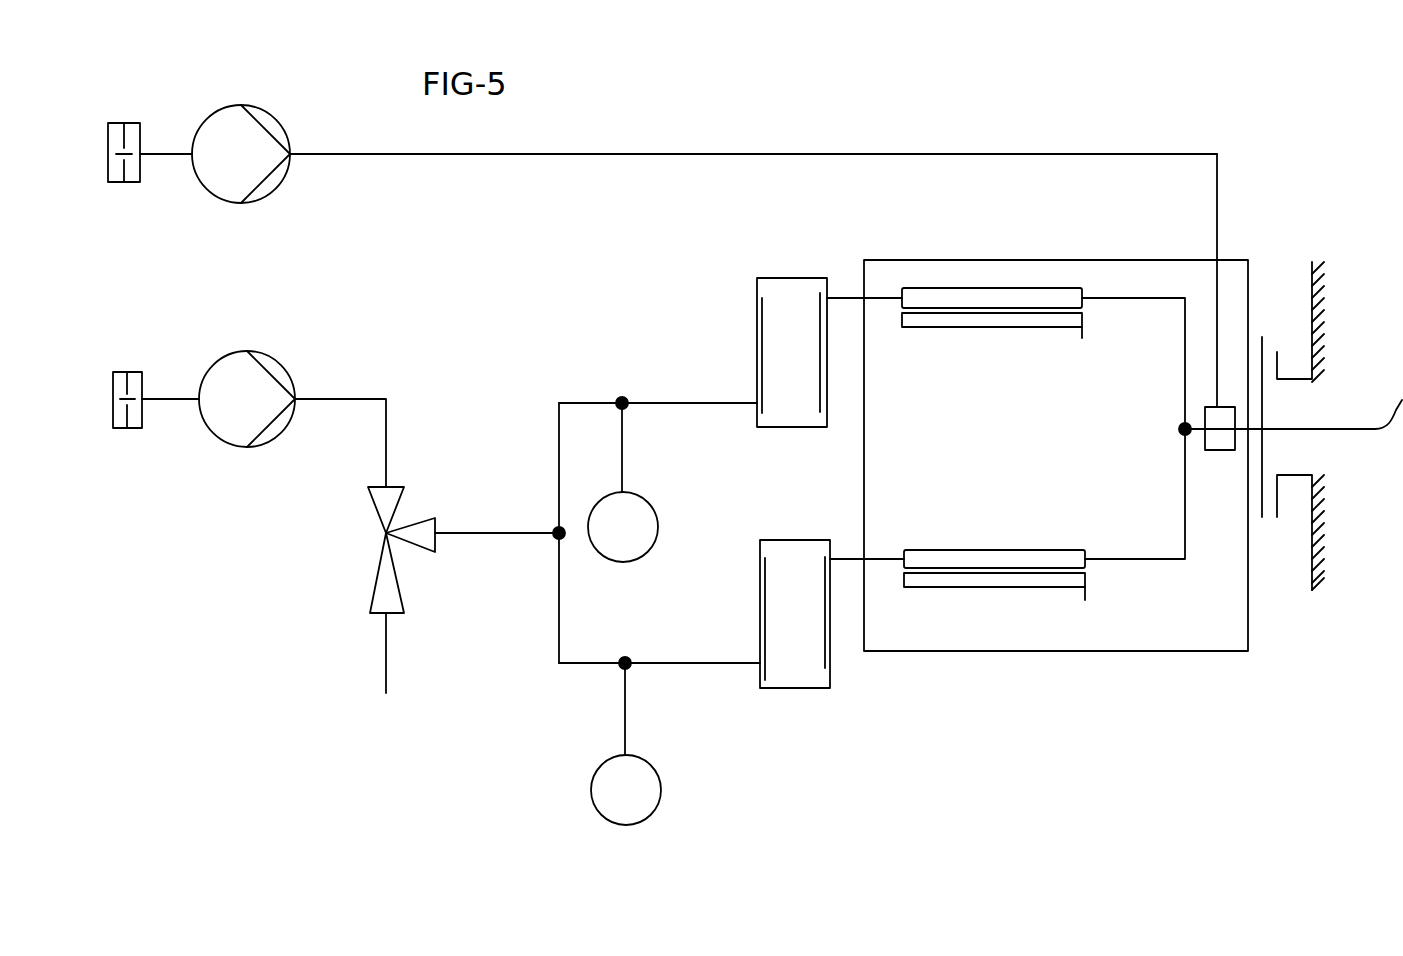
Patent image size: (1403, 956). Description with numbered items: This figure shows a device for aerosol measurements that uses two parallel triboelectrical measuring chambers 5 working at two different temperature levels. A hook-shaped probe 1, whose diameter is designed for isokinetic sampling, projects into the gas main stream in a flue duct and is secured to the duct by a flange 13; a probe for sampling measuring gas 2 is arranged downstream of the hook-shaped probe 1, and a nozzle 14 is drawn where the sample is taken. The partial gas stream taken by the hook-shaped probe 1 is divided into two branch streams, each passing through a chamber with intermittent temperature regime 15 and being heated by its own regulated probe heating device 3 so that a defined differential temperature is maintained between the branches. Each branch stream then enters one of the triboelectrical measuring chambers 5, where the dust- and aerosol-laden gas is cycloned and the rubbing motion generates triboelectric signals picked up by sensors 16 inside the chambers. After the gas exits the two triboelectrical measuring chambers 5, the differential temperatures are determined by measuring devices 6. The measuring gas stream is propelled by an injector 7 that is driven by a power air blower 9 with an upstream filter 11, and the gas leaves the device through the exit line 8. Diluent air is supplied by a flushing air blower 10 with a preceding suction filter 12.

The hook-shaped probe 1 is at (1360, 423).
The probe for sampling measuring gas 2 is at (1083, 651).
The regulated probe heating device 3 is at (902, 327).
The triboelectrical measuring chamber 5 is at (757, 373).
The measuring device 6 is at (633, 493).
The injector 7 is at (395, 520).
The gas exit line 8 is at (388, 660).
The power air blower 9 is at (263, 353).
The flushing air blower 10 is at (267, 110).
The fluid reservoir 11 is at (137, 428).
The suction filter 12 is at (112, 182).
The flange 13 is at (1280, 357).
The nozzle 14 is at (1208, 407).
The chamber with intermittent temperature regime 15 is at (958, 287).
The sensors 16 is at (762, 300).